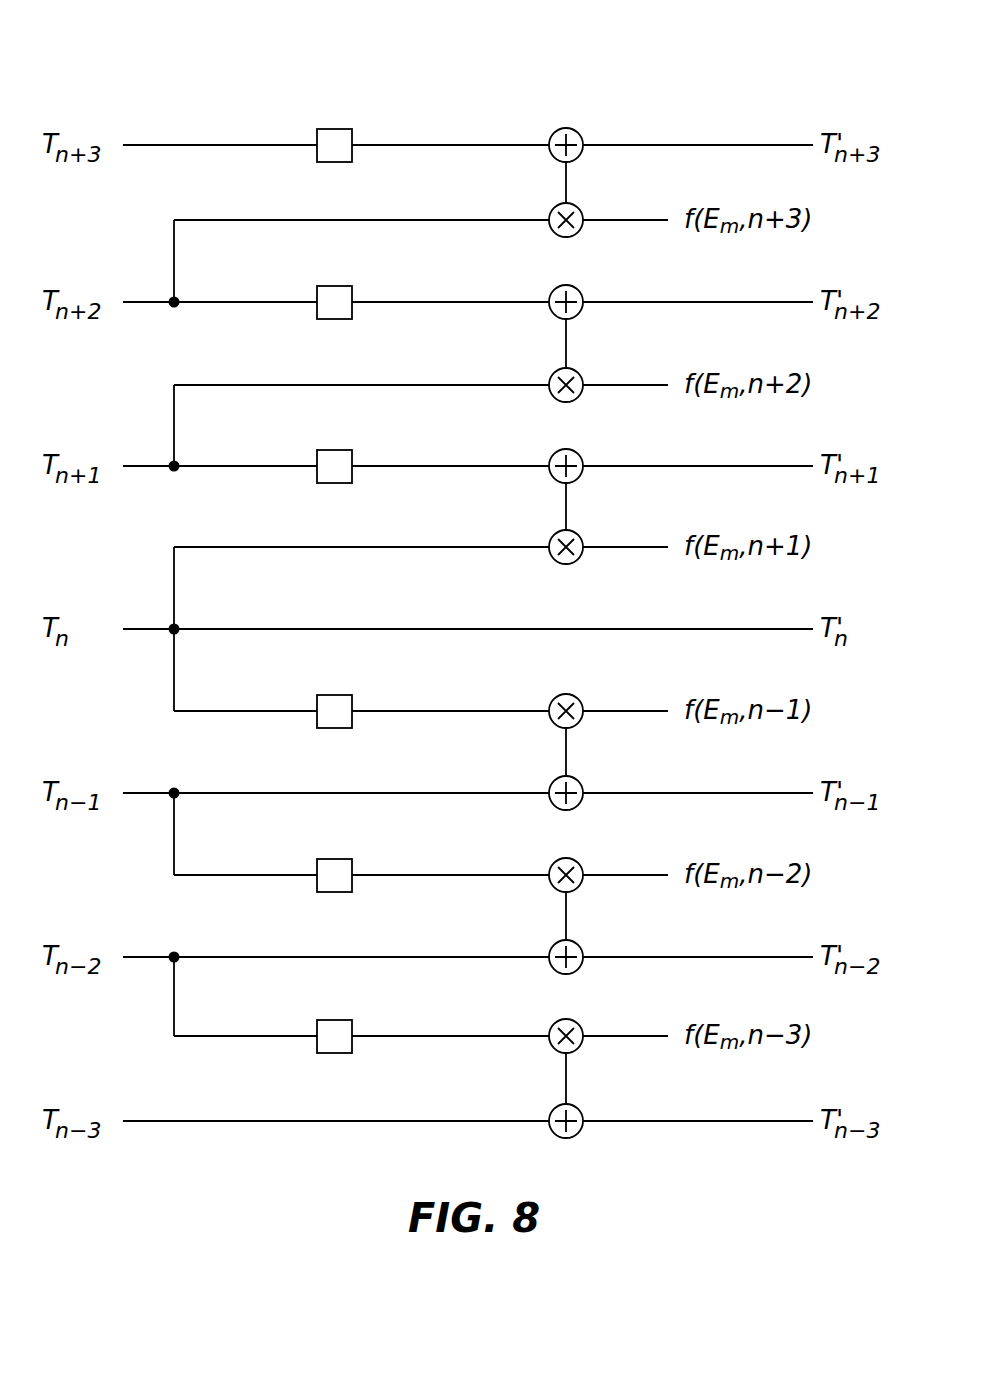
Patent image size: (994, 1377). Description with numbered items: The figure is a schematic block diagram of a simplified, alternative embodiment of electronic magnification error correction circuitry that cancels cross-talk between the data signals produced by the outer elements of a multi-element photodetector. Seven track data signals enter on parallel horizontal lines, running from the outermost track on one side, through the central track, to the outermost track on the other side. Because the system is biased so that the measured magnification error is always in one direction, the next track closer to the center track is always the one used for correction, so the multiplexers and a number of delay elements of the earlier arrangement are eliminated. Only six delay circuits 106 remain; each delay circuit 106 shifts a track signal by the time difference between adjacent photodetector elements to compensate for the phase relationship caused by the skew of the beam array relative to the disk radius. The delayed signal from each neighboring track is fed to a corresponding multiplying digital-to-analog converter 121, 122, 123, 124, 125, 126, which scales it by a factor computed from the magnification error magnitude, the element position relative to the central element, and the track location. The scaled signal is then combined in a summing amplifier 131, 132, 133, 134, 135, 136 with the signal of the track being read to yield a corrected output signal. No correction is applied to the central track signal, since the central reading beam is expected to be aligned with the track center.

The delay circuit 106 is at (335, 128).
The multiplying digital-to-analog converter 121 is at (552, 560).
The multiplying digital-to-analog converter 122 is at (552, 722).
The multiplying digital-to-analog converter 123 is at (578, 400).
The multiplying digital-to-analog converter 124 is at (578, 889).
The multiplying digital-to-analog converter 125 is at (578, 233).
The multiplying digital-to-analog converter 126 is at (553, 1050).
The summing amplifier 131 is at (552, 478).
The summing amplifier 132 is at (551, 807).
The summing amplifier 133 is at (580, 313).
The summing amplifier 134 is at (575, 970).
The summing amplifier 135 is at (568, 129).
The summing amplifier 136 is at (573, 1135).